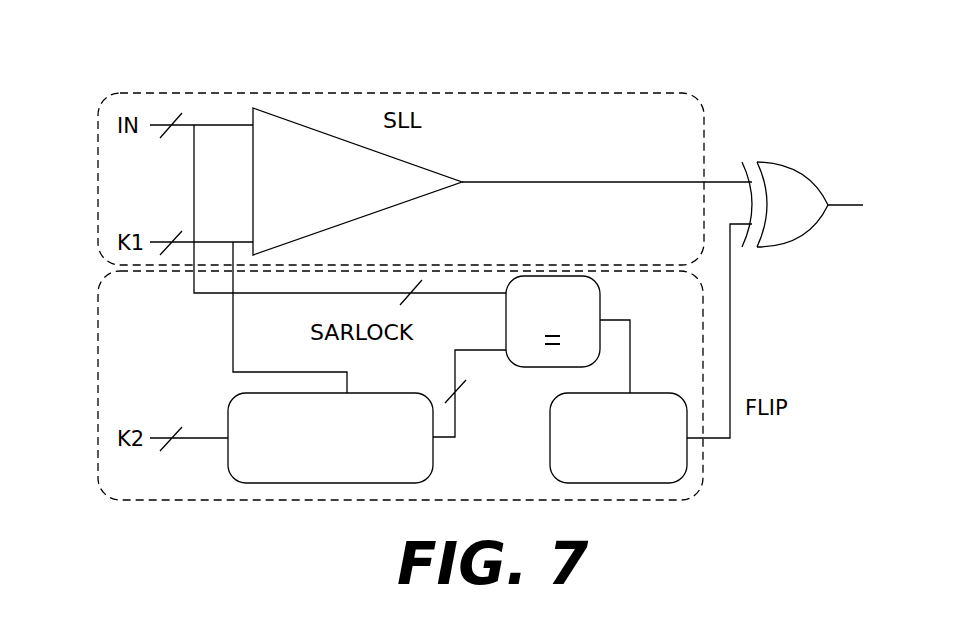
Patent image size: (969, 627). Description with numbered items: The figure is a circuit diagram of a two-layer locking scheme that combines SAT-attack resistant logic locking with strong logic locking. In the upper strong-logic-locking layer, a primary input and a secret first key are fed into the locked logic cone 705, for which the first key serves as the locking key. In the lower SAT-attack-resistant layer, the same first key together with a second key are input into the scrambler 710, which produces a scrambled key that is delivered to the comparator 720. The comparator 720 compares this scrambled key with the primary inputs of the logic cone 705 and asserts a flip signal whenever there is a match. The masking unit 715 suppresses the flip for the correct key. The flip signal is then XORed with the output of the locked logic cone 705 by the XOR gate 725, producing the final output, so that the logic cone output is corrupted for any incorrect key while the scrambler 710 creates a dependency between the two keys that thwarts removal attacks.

The locked logic cone 705 is at (273, 125).
The scrambler 710 is at (242, 405).
The masking unit 715 is at (667, 470).
The comparator 720 is at (597, 300).
The XOR gate 725 is at (787, 181).